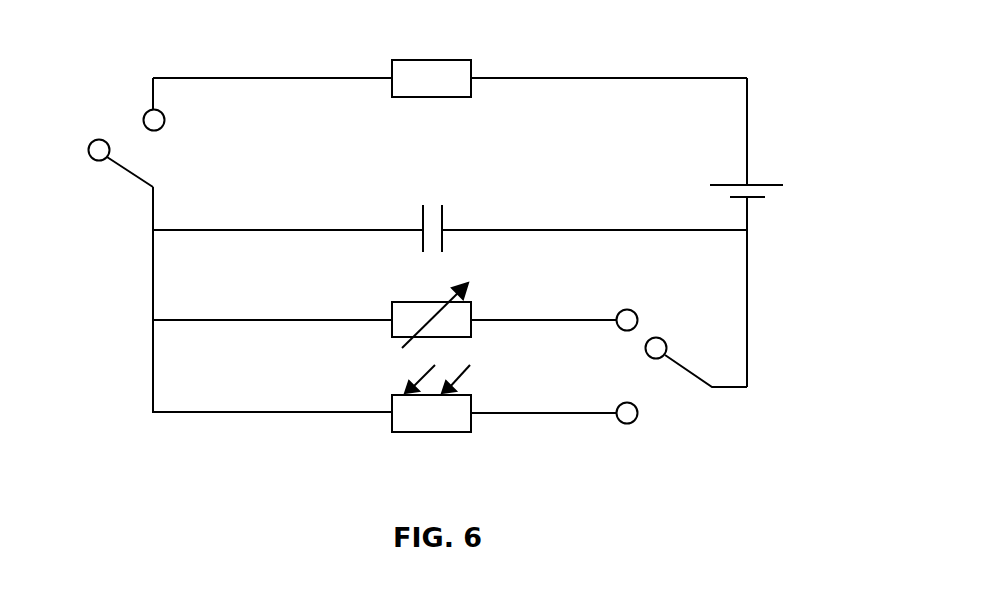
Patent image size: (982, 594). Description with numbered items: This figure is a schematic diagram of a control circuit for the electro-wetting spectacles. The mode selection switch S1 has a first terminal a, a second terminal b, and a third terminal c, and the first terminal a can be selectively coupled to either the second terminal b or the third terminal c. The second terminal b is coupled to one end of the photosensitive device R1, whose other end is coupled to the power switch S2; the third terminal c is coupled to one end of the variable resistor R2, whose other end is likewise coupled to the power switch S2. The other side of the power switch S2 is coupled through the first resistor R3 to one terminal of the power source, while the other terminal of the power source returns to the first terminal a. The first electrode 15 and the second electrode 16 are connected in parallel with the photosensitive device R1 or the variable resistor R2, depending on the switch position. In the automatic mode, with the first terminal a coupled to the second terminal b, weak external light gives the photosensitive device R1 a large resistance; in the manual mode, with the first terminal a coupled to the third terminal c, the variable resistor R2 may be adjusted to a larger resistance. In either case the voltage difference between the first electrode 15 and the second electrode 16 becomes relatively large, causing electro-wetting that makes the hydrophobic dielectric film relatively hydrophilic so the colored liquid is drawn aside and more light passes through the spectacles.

The first electrode 15 is at (427, 216).
The second electrode 16 is at (432, 228).
The photosensitive device R1 is at (504, 405).
The variable resistor R2 is at (504, 317).
The first resistor R3 is at (446, 85).
The mode selection switch S1 is at (702, 373).
The power switch S2 is at (127, 149).
The first terminal a is at (650, 352).
The second terminal b is at (627, 429).
The third terminal c is at (627, 306).